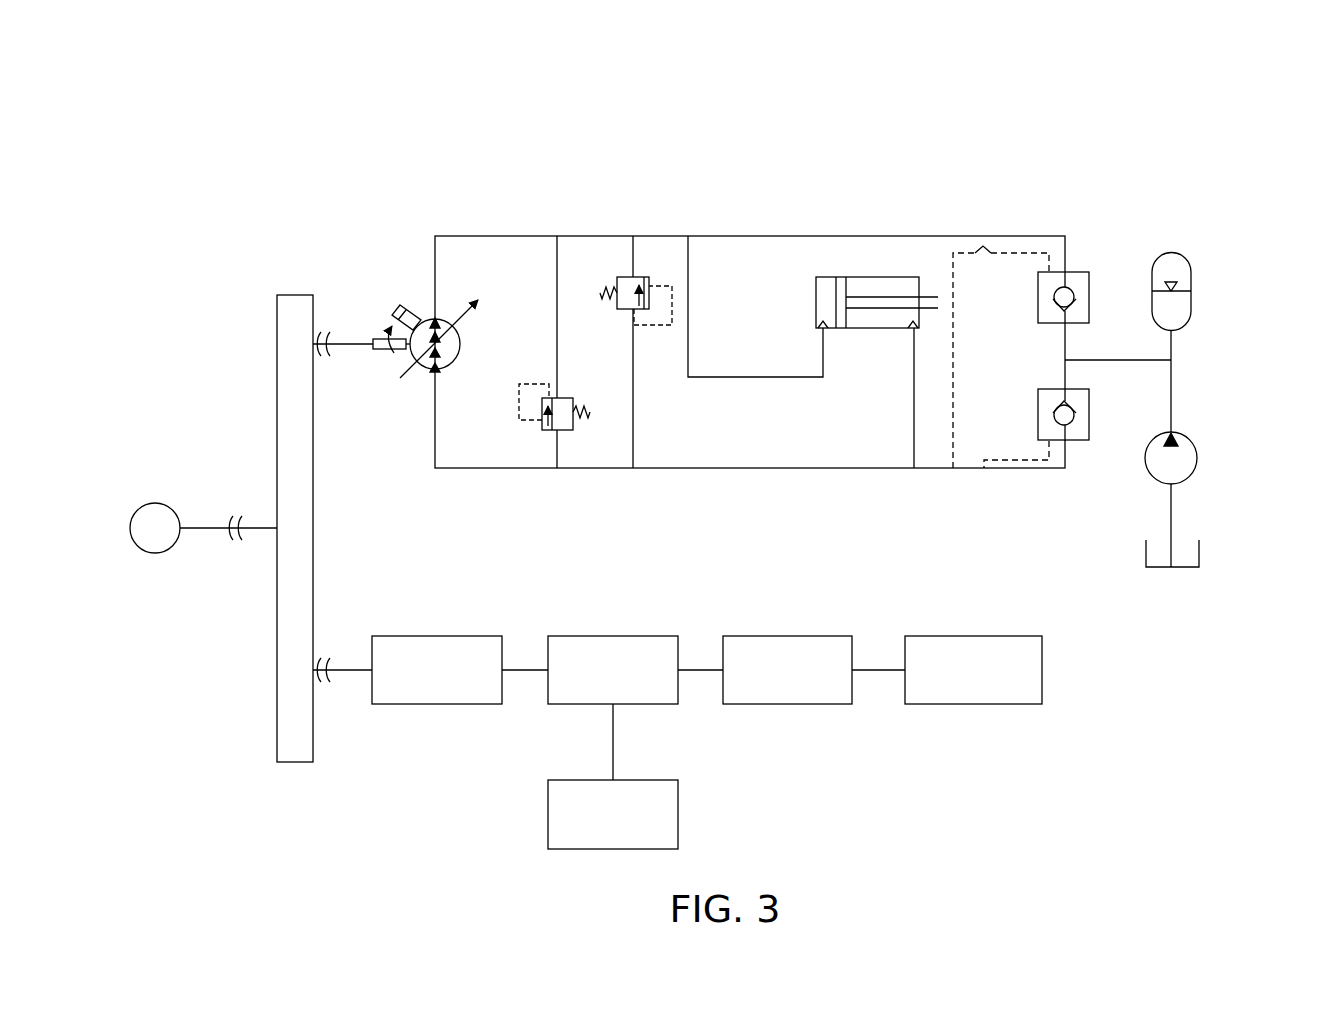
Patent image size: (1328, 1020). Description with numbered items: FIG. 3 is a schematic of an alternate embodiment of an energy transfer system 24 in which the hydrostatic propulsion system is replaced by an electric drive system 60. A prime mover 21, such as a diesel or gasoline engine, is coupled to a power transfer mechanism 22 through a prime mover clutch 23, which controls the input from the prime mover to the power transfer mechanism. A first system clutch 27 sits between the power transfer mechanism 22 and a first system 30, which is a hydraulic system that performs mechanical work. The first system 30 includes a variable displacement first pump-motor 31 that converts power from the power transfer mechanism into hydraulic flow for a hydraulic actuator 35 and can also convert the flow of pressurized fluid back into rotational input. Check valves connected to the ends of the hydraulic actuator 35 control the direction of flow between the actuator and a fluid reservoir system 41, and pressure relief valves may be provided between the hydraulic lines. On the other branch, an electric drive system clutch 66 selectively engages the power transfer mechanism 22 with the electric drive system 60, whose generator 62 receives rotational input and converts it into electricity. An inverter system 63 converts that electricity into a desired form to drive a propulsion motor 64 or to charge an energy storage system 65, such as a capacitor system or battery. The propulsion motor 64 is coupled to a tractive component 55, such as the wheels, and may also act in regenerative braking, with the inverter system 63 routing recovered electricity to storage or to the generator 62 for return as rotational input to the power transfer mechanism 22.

The prime mover 21 is at (152, 516).
The power transfer mechanism 22 is at (293, 762).
The prime mover clutch 23 is at (240, 545).
The energy transfer system 24 is at (452, 154).
The first system clutch 27 is at (322, 330).
The first system 30 is at (747, 221).
The first pump-motor 31 is at (457, 344).
The hydraulic actuator 35 is at (871, 277).
The fluid reservoir system 41 is at (1219, 270).
The tractive component 55 is at (1012, 636).
The electric drive system 60 is at (857, 745).
The generator 62 is at (474, 636).
The inverter system 63 is at (650, 636).
The propulsion motor 64 is at (825, 636).
The energy storage system 65 is at (650, 780).
The electric drive system clutch 66 is at (325, 685).